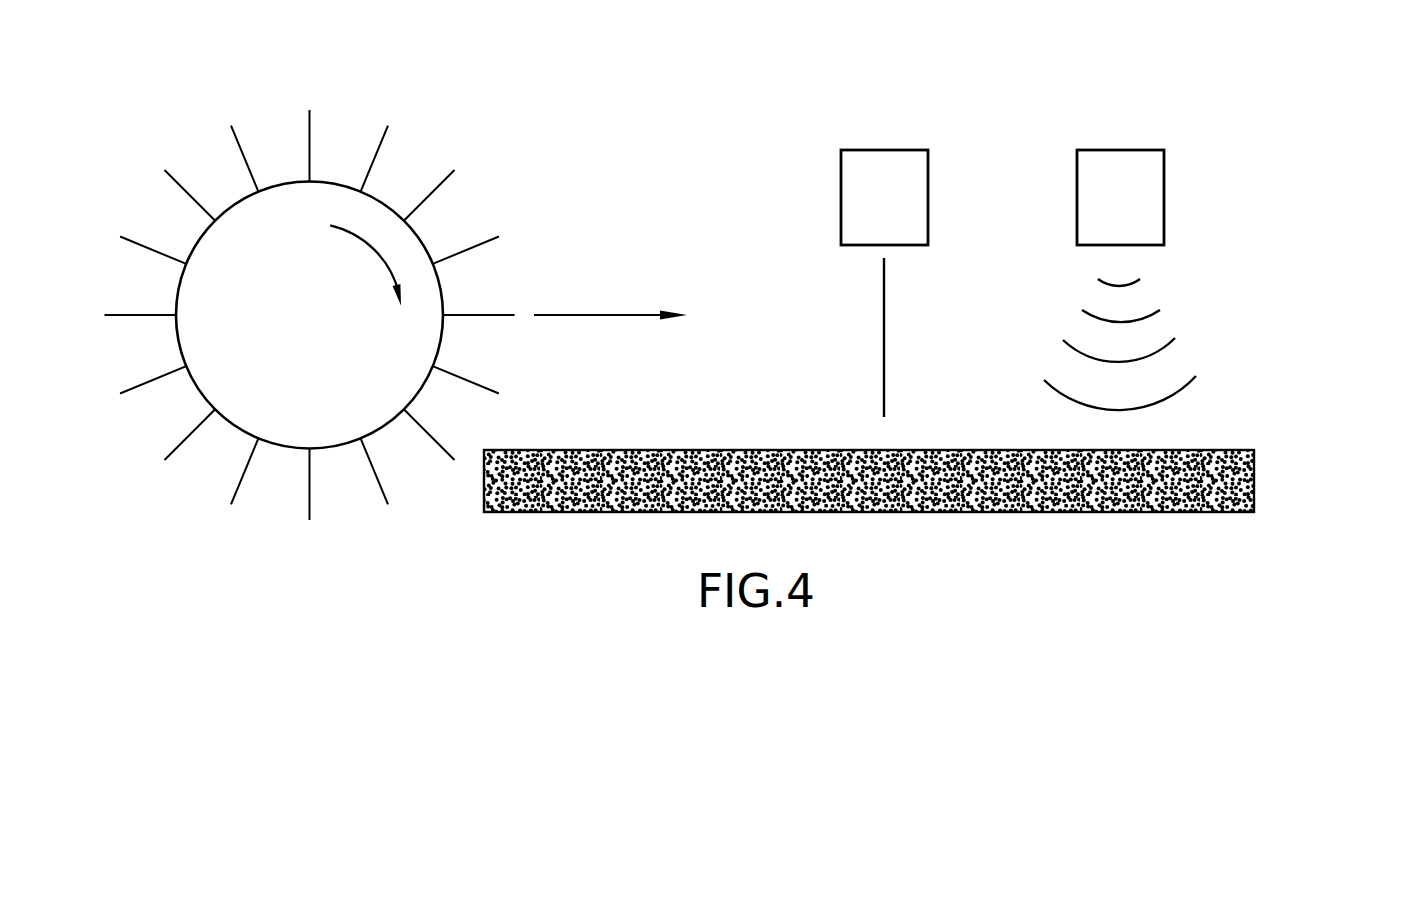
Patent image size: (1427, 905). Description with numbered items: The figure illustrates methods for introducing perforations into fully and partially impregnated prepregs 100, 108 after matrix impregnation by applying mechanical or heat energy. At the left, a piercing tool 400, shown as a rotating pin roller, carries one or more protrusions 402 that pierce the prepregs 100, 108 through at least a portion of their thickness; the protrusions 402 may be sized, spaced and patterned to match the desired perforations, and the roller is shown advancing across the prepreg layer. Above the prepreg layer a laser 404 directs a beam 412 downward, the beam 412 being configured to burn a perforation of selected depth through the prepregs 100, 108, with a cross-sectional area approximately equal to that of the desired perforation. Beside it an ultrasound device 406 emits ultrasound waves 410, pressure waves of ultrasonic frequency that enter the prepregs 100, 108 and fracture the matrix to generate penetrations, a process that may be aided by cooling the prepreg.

The piercing tool 400 is at (310, 281).
The protrusions 402 is at (497, 239).
The laser 404 is at (884, 150).
The ultrasound device 406 is at (1120, 150).
The ultrasound waves 410 is at (1175, 338).
The beam 412 is at (884, 365).
The fully impregnated prepreg 100 is at (955, 481).
The partially impregnated prepreg 108 is at (1256, 482).